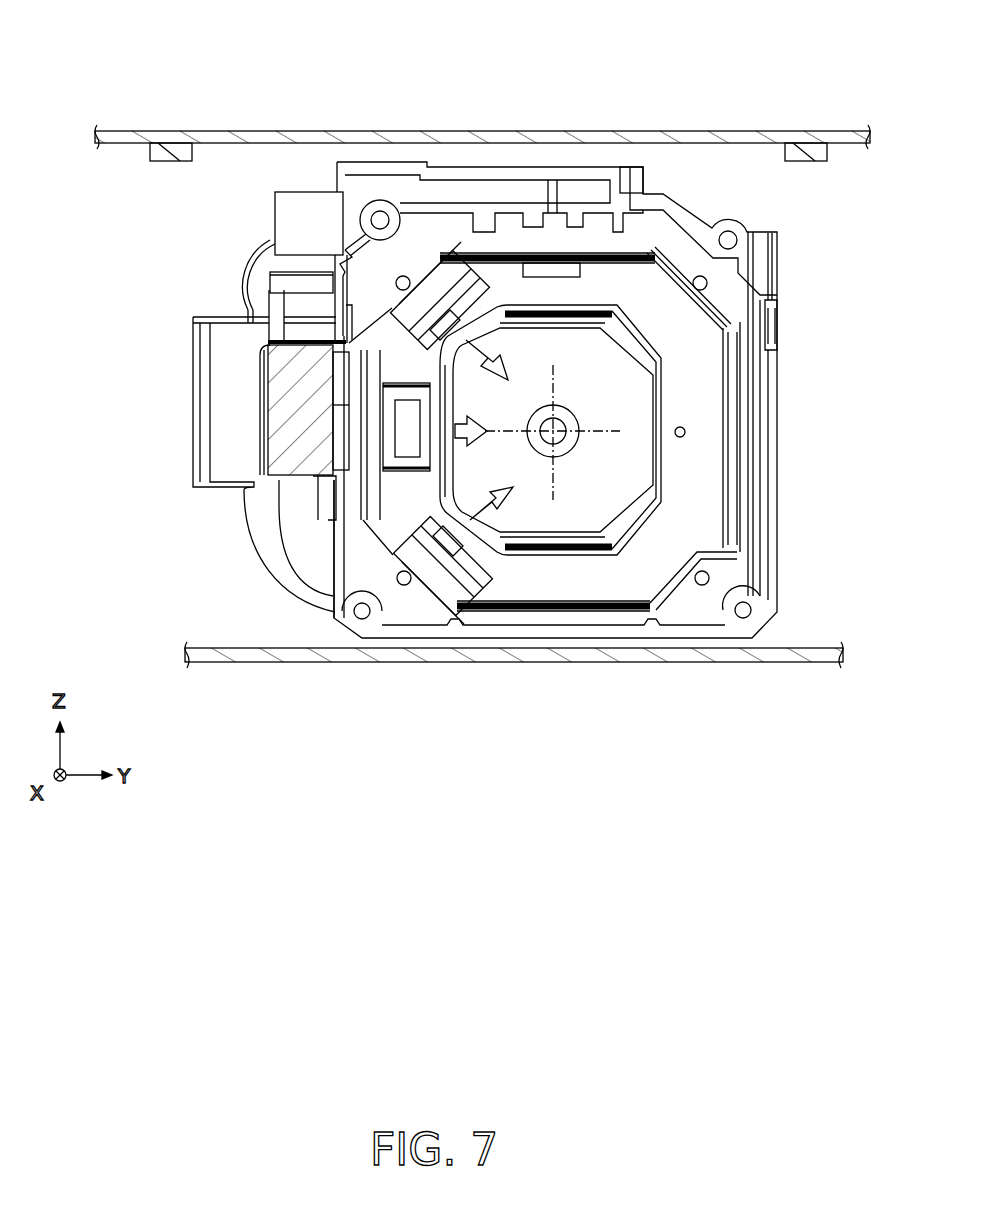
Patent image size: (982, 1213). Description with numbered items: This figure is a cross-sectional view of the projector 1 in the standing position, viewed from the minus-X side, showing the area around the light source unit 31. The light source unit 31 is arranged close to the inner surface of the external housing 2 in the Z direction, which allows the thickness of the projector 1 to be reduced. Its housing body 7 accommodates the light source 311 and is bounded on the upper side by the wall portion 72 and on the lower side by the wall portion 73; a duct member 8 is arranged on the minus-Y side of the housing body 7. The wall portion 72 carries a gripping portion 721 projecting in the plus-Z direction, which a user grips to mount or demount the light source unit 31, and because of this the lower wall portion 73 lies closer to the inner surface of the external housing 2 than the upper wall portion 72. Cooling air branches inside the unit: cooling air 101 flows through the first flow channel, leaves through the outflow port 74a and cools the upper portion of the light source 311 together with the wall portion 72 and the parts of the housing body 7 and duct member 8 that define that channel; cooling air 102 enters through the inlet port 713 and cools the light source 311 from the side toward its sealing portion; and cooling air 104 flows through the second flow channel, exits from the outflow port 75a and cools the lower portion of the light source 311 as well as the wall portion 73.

The projector 1 is at (700, 78).
The external housing 2 is at (585, 131).
The housing body 7 is at (288, 212).
The duct member 8 is at (210, 384).
The light source unit 31 is at (828, 298).
The wall portion 72 is at (598, 266).
The wall portion 73 is at (584, 598).
The outflow port 74a is at (490, 300).
The outflow port 75a is at (492, 580).
The cooling air 101 is at (508, 358).
The cooling air 102 is at (482, 443).
The cooling air 104 is at (512, 498).
The light source 311 is at (570, 414).
The inlet port 713 is at (428, 408).
The gripping portion 721 is at (666, 172).